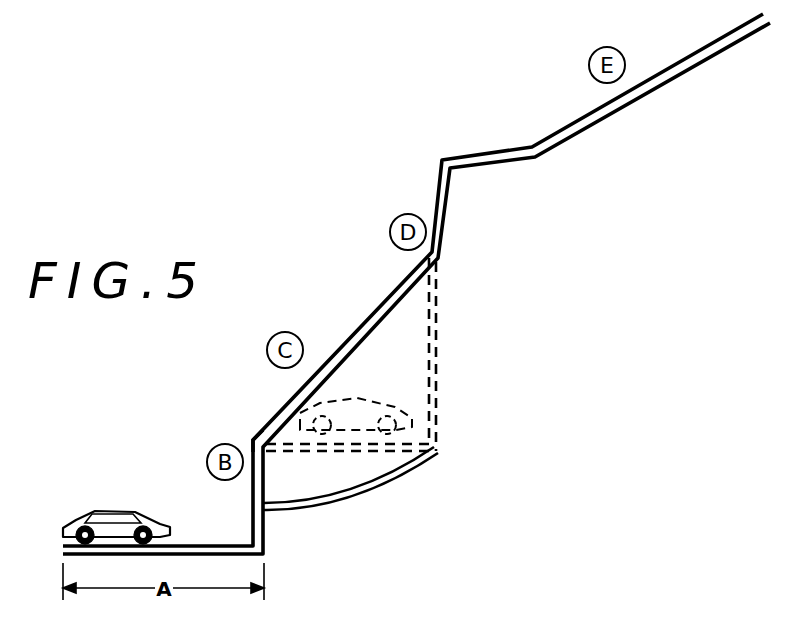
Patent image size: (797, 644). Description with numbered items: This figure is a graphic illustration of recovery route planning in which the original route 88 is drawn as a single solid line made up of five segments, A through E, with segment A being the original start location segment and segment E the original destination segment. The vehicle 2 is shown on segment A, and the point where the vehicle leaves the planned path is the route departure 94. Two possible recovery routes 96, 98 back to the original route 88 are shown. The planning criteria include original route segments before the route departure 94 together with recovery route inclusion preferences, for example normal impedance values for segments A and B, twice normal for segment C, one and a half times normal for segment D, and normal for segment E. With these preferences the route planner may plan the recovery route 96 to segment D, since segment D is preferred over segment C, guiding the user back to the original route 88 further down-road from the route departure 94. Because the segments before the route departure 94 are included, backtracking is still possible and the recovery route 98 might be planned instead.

The vehicle 2 is at (112, 512).
The original route plan 88 is at (500, 148).
The route departure point 94 is at (253, 441).
The recovery route 96 is at (432, 343).
The recovery route 98 is at (370, 488).